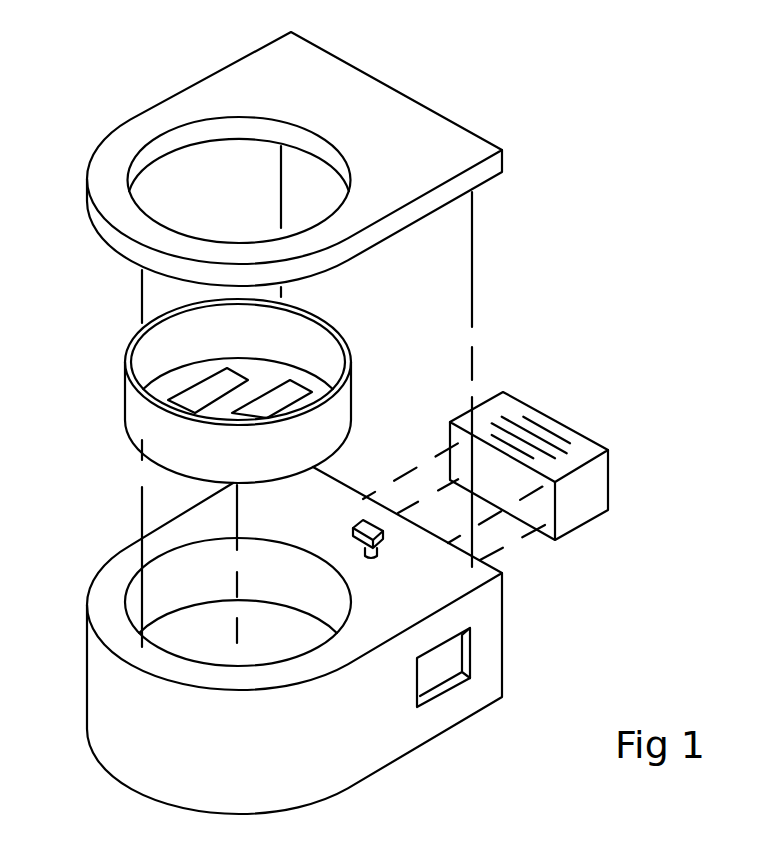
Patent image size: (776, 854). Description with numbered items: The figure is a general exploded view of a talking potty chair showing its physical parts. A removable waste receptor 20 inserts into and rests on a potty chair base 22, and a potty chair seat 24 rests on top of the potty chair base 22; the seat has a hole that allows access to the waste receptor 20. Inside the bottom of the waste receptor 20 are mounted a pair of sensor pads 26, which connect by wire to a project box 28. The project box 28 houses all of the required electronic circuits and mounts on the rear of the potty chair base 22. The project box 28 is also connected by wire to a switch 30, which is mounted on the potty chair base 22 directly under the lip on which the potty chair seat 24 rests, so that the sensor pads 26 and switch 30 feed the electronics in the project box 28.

The removable waste receptor 20 is at (353, 368).
The potty chair base 22 is at (503, 603).
The potty chair seat 24 is at (418, 102).
The sensor pads 26 is at (266, 380).
The project box 28 is at (581, 429).
The switch 30 is at (384, 533).